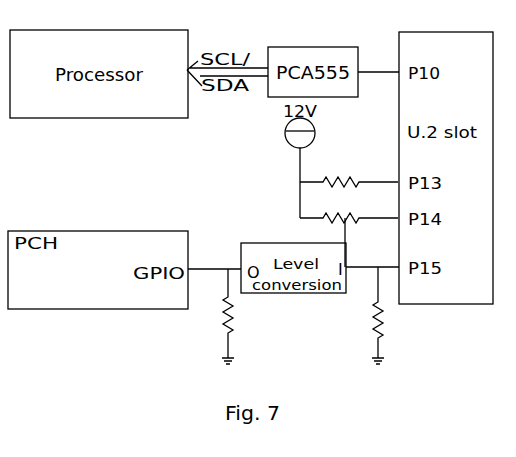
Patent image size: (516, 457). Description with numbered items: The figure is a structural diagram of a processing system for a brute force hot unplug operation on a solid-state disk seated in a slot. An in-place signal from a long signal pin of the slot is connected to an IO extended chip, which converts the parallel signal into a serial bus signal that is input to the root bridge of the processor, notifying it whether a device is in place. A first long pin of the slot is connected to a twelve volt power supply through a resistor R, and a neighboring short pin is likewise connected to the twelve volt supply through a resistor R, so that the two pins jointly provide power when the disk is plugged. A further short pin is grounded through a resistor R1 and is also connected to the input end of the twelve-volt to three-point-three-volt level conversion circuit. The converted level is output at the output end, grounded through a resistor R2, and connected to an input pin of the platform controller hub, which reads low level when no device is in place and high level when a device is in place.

The resistor R is at (349, 211).
The resistor R1 is at (364, 315).
The resistor R2 is at (215, 316).